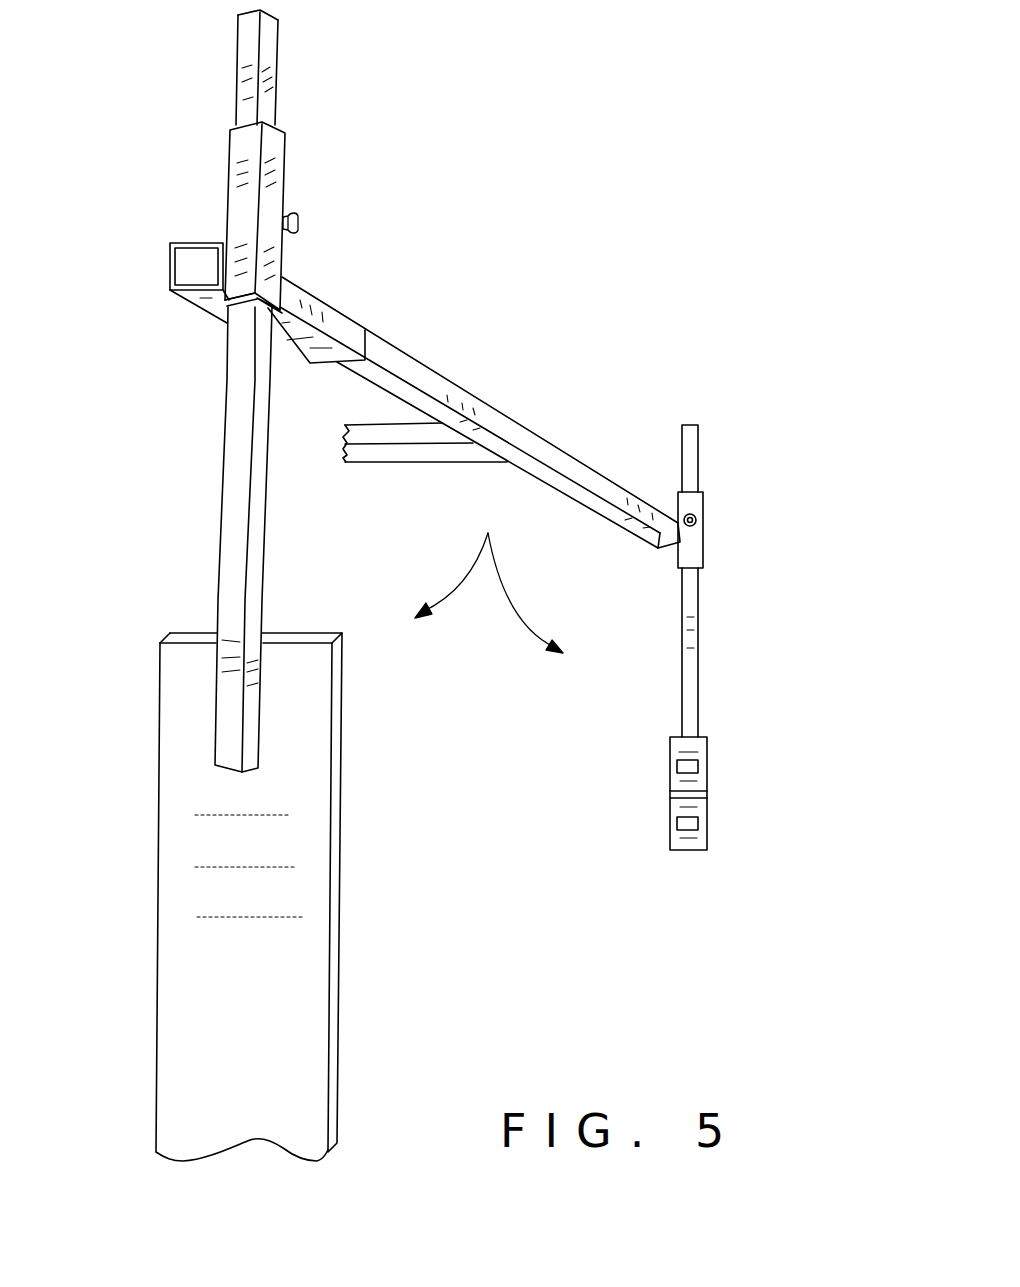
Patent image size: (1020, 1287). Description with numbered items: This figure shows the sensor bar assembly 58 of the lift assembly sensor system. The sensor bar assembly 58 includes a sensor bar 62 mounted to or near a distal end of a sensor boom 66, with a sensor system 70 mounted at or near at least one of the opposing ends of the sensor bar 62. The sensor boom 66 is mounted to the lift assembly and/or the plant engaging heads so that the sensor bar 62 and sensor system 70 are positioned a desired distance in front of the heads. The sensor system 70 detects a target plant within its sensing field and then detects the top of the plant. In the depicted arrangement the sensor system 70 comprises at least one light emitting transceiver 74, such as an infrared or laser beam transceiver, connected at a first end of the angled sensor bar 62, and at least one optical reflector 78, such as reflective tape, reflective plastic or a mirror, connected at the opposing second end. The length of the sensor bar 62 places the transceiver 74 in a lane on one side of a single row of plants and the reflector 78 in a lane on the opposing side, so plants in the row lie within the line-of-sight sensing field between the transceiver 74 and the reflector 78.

The sensor bar assembly 58 is at (568, 308).
The sensor bar 62 is at (389, 341).
The sensor boom 66 is at (435, 465).
The sensor system 70 is at (192, 200).
The light emitting transceiver 74 is at (697, 757).
The optical reflector 78 is at (178, 748).